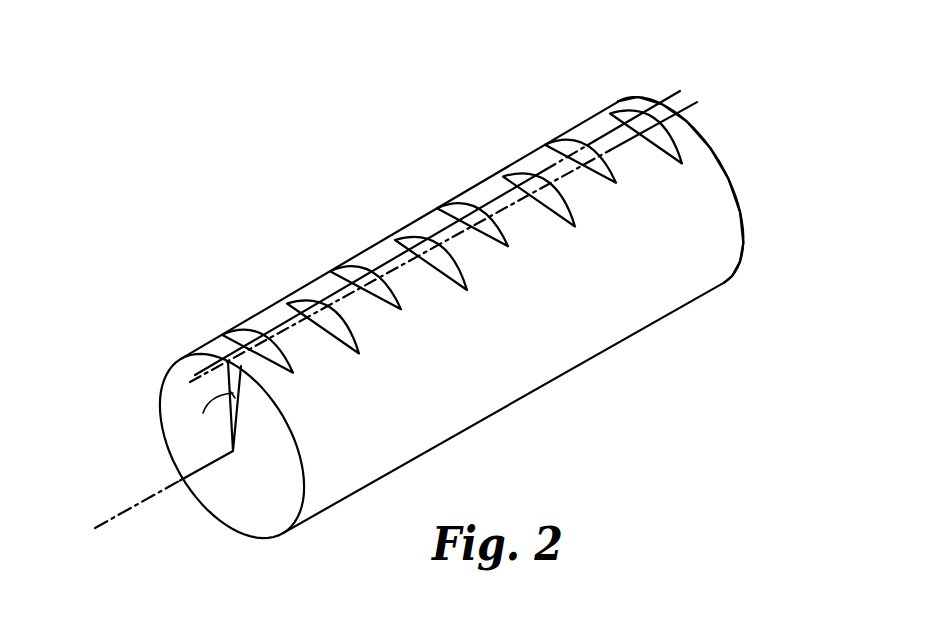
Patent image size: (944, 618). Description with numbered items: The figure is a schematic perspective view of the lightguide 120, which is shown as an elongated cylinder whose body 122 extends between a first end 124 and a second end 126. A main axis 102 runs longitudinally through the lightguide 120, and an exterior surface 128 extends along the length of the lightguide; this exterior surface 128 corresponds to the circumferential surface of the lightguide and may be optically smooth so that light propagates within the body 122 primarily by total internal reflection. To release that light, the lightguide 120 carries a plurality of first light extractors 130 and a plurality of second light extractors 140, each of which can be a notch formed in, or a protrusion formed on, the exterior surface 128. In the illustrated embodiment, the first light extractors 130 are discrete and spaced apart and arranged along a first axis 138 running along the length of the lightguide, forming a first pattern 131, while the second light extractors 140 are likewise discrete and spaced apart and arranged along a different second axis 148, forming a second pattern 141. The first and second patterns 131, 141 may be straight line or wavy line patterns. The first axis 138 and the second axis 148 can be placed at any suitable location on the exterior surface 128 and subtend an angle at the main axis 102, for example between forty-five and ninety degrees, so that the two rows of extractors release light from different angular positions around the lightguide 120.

The main axis 102 is at (155, 489).
The lightguide 120 is at (447, 301).
The body 122 is at (390, 453).
The first end 124 is at (228, 493).
The second end 126 is at (732, 177).
The exterior surface 128 is at (710, 200).
The first light extractors 130 is at (243, 335).
The first pattern 131 is at (313, 331).
The first axis 138 is at (680, 91).
The second light extractors 140 is at (338, 335).
The second pattern 141 is at (584, 96).
The second axis 148 is at (693, 102).